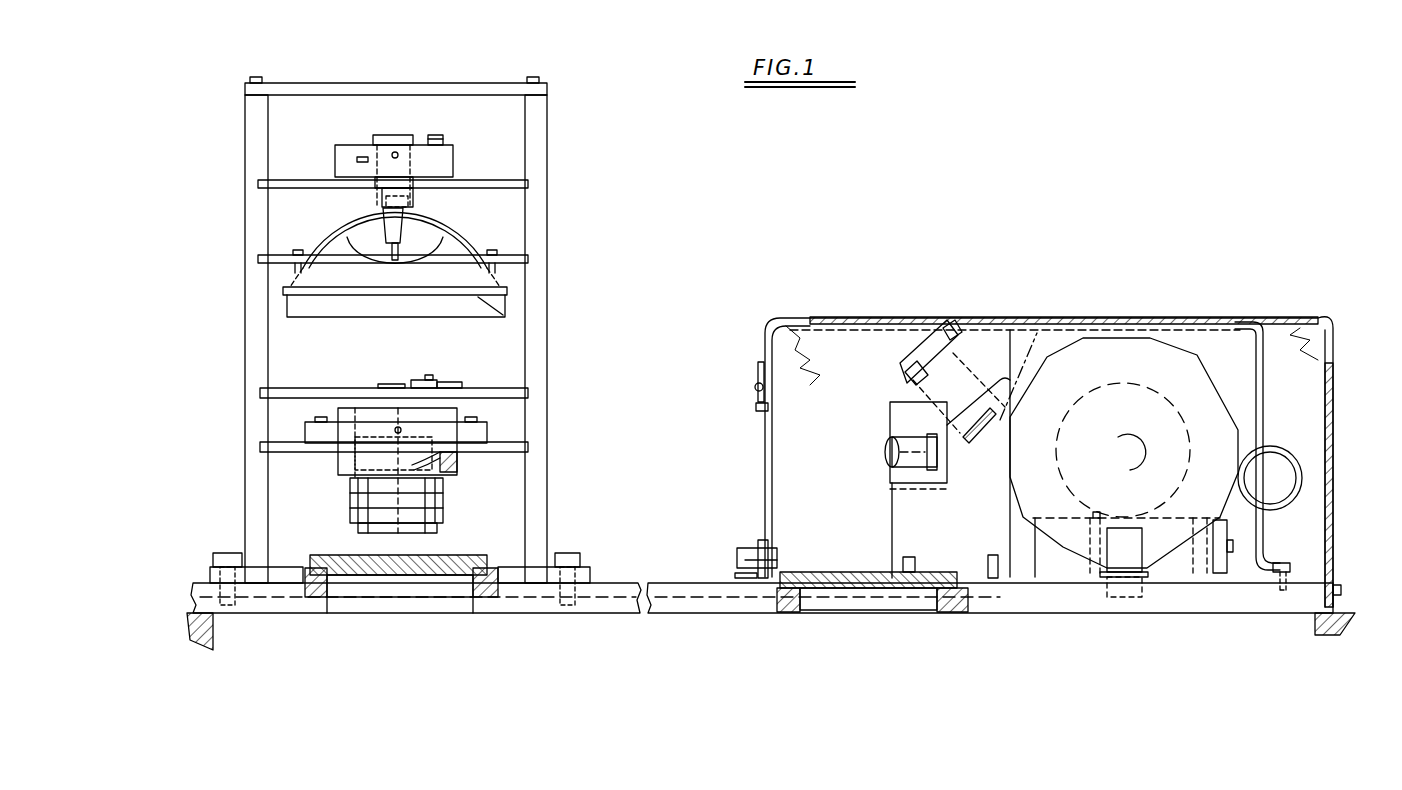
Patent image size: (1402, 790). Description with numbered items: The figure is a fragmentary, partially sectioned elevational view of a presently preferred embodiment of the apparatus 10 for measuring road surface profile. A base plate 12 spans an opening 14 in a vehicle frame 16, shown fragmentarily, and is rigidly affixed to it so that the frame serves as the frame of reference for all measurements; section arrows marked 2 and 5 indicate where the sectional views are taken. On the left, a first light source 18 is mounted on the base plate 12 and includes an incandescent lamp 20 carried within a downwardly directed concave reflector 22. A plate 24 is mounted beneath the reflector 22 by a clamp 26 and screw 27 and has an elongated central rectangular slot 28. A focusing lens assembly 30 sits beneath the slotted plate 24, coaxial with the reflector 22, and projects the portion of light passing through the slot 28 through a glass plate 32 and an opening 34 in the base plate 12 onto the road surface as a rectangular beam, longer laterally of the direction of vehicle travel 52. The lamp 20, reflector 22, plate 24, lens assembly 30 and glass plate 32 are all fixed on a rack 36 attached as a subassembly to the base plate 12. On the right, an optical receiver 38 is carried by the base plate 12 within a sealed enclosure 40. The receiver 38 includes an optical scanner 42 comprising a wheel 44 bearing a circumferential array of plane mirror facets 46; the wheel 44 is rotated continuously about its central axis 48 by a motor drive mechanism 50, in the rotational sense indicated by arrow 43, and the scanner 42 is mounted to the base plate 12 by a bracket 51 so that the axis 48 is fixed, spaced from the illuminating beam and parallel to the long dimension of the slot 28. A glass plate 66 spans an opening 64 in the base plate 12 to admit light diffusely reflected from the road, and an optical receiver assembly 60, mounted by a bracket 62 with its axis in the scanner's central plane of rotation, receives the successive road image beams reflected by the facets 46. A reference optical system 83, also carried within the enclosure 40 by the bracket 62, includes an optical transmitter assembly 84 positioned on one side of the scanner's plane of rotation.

The apparatus 10 is at (977, 295).
The base plate 12 is at (612, 585).
The opening 14 is at (215, 635).
The vehicle frame 16 is at (1330, 632).
The first light source 18 is at (466, 160).
The incandescent lamp 20 is at (405, 240).
The concave reflector 22 is at (458, 250).
The plate 24 is at (380, 385).
The clamp 26 is at (445, 385).
The screw 27 is at (432, 380).
The slot 28 is at (395, 386).
The focusing lens assembly 30 is at (346, 504).
The glass plate 32 is at (440, 555).
The opening 34 is at (470, 613).
The rack 36 is at (540, 328).
The optical receiver 38 is at (860, 357).
The sealed enclosure 40 is at (1137, 315).
The optical scanner 42 is at (1202, 350).
The rotation direction 43 is at (1138, 480).
The wheel 44 is at (1220, 412).
The mirror facets 46 is at (1053, 357).
The central axis 48 is at (1123, 450).
The motor drive mechanism 50 is at (1177, 412).
The bracket 51 is at (1030, 577).
The direction of vehicle travel 52 is at (1137, 643).
The optical receiver assembly 60 is at (920, 338).
The bracket 62 is at (900, 392).
The opening 64 is at (933, 615).
The glass plate 66 is at (828, 575).
The reference optical system 83 is at (872, 492).
The optical transmitter assembly 84 is at (887, 452).
The section line 5 is at (457, 368).
The section line 2 is at (868, 431).